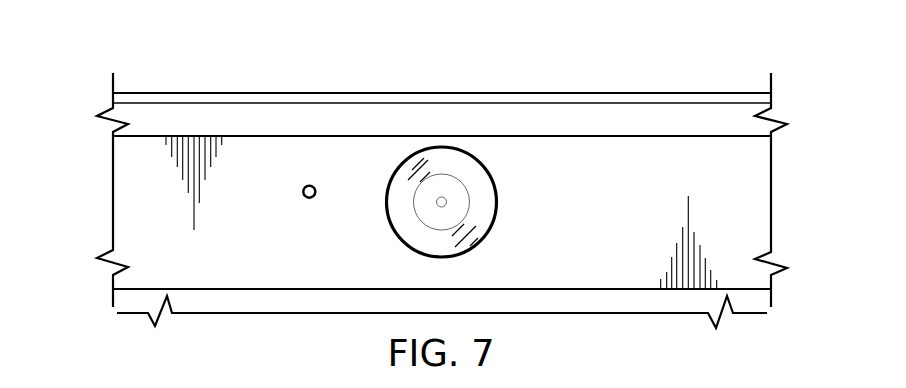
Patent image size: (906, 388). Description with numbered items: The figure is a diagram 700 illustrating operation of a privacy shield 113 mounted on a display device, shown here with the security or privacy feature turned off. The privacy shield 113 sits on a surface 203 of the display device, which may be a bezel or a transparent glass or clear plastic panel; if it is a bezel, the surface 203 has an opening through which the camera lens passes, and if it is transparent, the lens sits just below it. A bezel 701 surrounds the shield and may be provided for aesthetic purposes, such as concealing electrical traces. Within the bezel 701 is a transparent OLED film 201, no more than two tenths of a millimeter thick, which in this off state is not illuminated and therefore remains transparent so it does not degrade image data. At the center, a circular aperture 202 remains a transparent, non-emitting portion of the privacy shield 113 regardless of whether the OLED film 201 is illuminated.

The diagram 700 is at (627, 70).
The surface 203 is at (119, 189).
The bezel 701 is at (399, 219).
The OLED film 201 is at (456, 192).
The circular aperture 202 is at (447, 202).
The privacy shield 113 is at (578, 178).